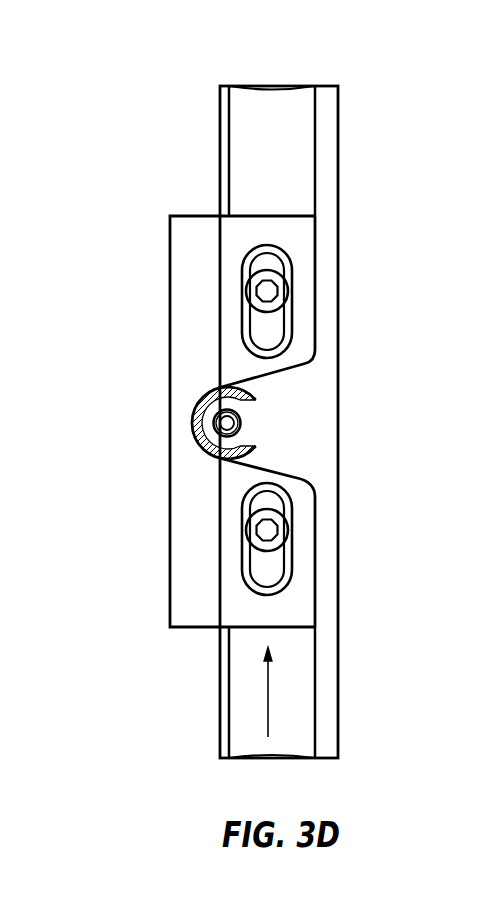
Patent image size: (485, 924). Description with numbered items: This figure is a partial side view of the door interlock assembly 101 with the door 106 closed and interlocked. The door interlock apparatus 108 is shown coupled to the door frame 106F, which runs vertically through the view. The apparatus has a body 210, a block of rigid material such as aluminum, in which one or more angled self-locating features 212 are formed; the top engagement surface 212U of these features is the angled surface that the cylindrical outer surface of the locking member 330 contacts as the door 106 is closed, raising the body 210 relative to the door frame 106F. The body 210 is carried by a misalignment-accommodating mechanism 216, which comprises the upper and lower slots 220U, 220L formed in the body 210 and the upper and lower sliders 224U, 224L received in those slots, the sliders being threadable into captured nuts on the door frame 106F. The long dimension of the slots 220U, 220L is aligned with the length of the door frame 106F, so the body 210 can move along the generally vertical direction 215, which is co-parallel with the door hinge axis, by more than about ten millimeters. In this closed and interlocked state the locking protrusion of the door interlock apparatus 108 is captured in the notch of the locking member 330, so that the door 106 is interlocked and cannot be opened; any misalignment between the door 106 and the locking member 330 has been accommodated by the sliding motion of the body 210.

The door interlock assembly 101 is at (182, 174).
The door 106 is at (220, 74).
The door frame 106F is at (273, 112).
The door interlock apparatus 108 is at (158, 323).
The body 210 is at (192, 475).
The angled self-locating features 212 is at (330, 463).
The top engagement surface 212U is at (270, 378).
The direction 215 is at (268, 698).
The misalignment-accommodating mechanism 216 is at (218, 508).
The upper slot 220U is at (236, 315).
The lower slot 220L is at (234, 581).
The upper slider 224U is at (266, 290).
The lower slider 224L is at (267, 532).
The locking member 330 is at (355, 422).